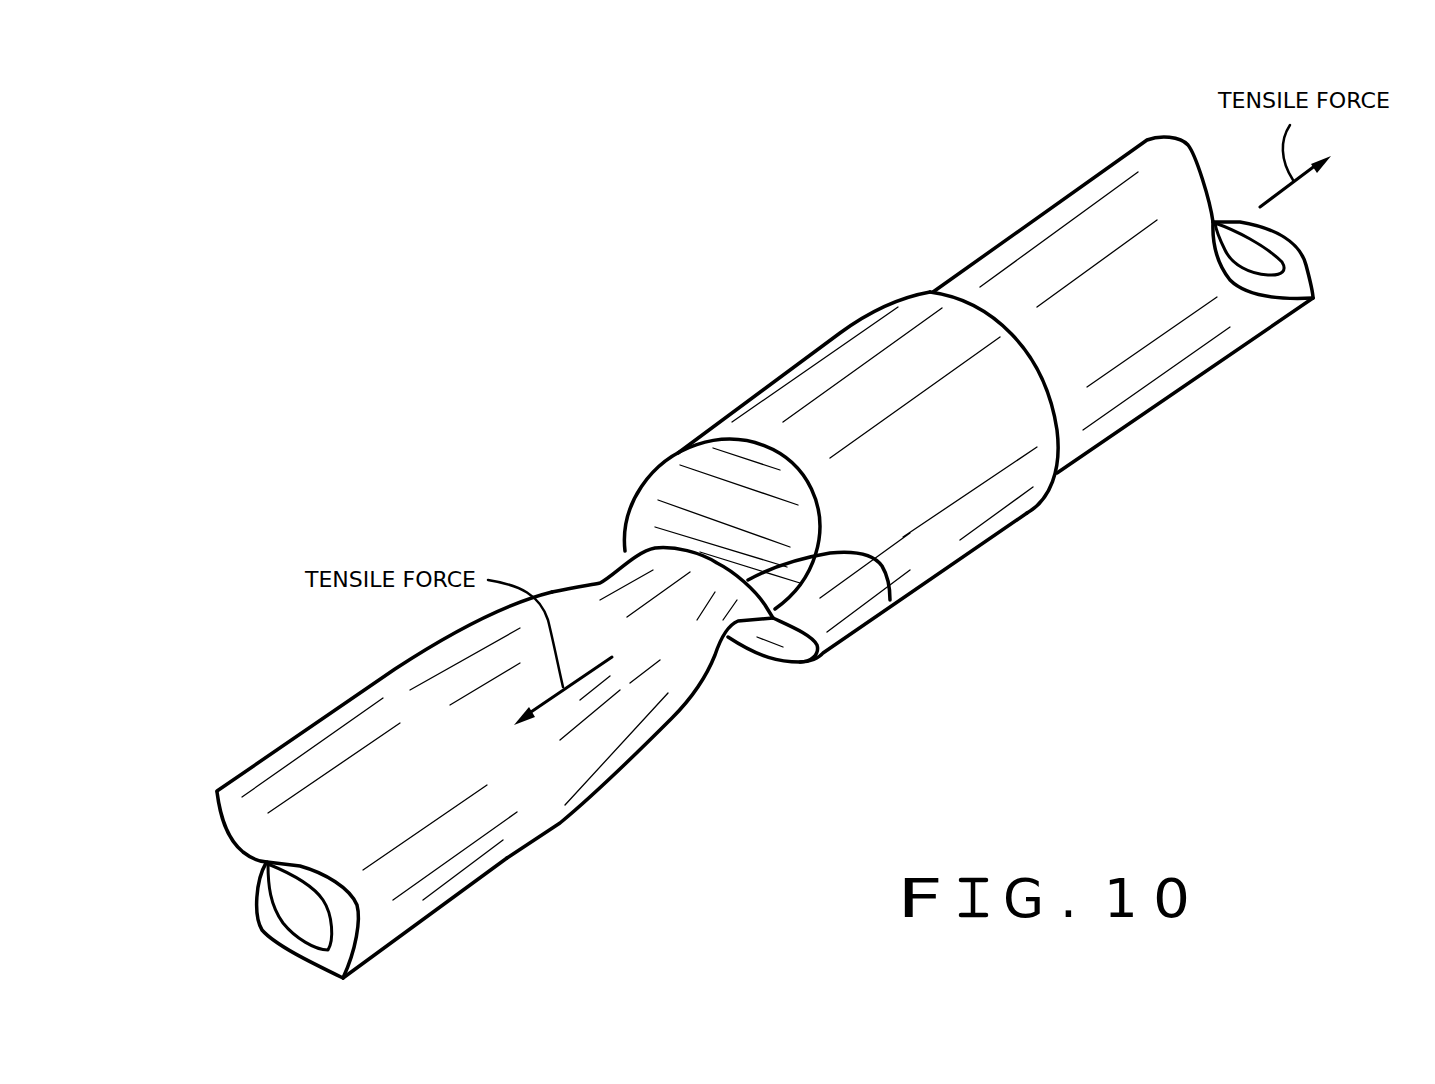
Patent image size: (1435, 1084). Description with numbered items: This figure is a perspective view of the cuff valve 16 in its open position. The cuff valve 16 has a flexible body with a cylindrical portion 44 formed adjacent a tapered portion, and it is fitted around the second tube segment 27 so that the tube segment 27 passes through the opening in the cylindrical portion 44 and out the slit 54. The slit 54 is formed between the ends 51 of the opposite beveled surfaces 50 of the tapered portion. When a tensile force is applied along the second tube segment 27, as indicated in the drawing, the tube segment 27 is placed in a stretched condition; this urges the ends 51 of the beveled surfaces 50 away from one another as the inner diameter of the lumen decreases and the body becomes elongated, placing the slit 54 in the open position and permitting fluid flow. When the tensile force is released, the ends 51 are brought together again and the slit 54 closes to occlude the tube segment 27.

The cuff valve 16 is at (953, 568).
The second tube segment 27 is at (681, 746).
The cylindrical portion 44 is at (845, 385).
The beveled surfaces 50 is at (713, 503).
The ends of the beveled surfaces 51 is at (890, 600).
The slit 54 is at (657, 548).